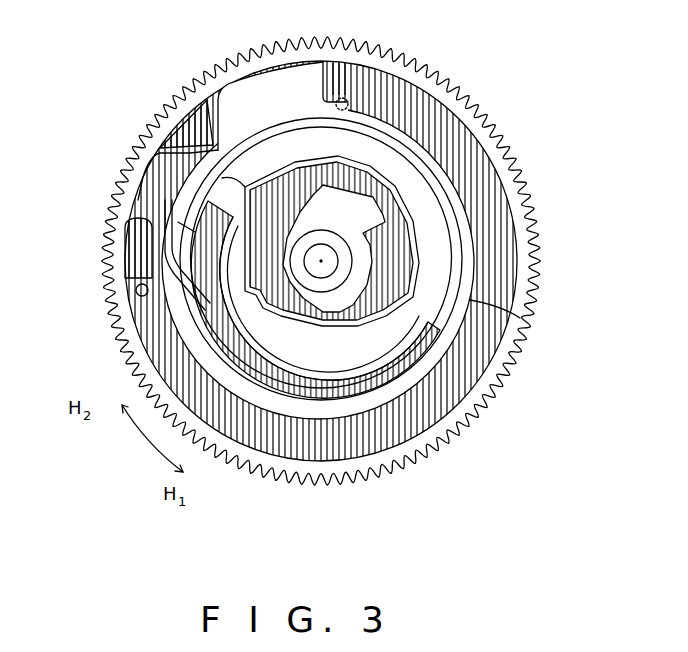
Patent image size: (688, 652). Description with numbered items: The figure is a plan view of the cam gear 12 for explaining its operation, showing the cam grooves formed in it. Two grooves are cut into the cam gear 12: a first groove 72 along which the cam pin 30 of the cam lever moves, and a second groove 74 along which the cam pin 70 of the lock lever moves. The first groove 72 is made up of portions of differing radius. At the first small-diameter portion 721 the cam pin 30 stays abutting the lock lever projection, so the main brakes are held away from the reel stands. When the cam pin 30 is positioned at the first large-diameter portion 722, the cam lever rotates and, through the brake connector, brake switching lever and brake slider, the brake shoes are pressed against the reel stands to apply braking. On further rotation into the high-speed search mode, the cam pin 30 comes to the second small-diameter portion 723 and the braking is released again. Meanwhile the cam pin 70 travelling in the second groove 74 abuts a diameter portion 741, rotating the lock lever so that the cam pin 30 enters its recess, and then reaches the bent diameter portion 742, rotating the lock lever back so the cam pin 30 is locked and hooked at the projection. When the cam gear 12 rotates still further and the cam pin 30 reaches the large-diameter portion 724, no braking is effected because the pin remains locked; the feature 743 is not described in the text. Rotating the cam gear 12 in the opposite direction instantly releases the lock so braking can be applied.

The cam gear 12 is at (360, 518).
The cam pin 30 is at (345, 98).
The cam pin 70 is at (277, 150).
The first groove 72 is at (410, 133).
The first small-diameter portion 721 is at (520, 318).
The first large-diameter portion 722 is at (178, 222).
The second small-diameter portion 723 is at (207, 148).
The large-diameter portion 724 is at (262, 108).
The second groove 74 is at (430, 205).
The diameter portion 741 is at (233, 270).
The diameter portion 742 is at (235, 213).
The housing projection 743 is at (237, 193).